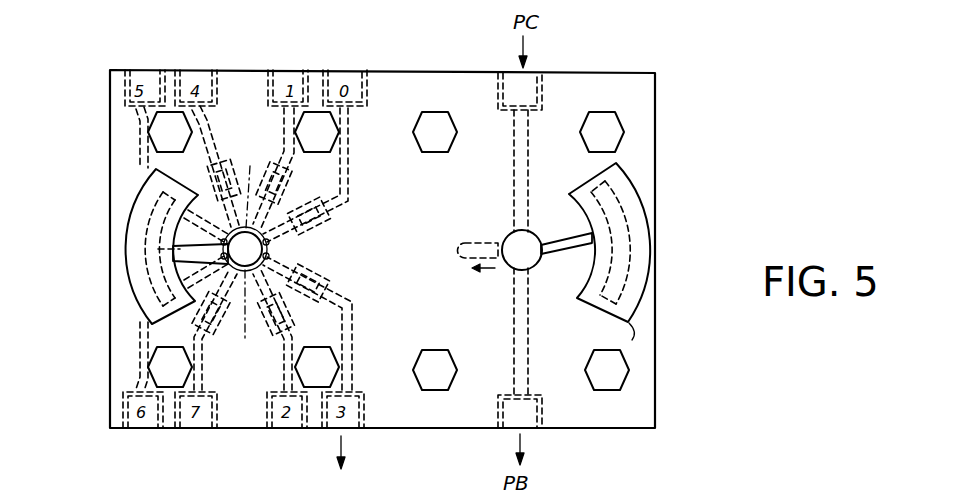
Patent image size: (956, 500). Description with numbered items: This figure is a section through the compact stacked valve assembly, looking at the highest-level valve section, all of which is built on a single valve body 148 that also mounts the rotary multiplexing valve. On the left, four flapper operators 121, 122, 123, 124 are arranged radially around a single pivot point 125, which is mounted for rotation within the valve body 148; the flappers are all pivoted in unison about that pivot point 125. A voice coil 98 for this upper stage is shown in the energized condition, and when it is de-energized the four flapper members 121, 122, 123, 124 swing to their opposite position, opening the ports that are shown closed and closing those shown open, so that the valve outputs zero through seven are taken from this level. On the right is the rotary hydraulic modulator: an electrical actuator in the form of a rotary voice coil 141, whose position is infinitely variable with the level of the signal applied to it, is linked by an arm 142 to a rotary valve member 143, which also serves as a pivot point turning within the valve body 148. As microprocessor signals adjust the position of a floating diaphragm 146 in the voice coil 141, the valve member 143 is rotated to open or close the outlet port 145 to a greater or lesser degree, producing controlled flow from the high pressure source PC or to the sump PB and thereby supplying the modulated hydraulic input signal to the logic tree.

The voice coil 98 is at (133, 207).
The flapper operator 121 is at (254, 186).
The flapper operator 122 is at (240, 319).
The flapper operator 123 is at (350, 311).
The flapper operator 124 is at (290, 182).
The pivot point 125 is at (267, 243).
The rotary voice coil 141 is at (638, 200).
The arm 142 is at (565, 255).
The rotary valve member 143 is at (518, 231).
The outlet port 145 is at (497, 243).
The floating diaphragm 146 is at (590, 242).
The valve body 148 is at (641, 436).